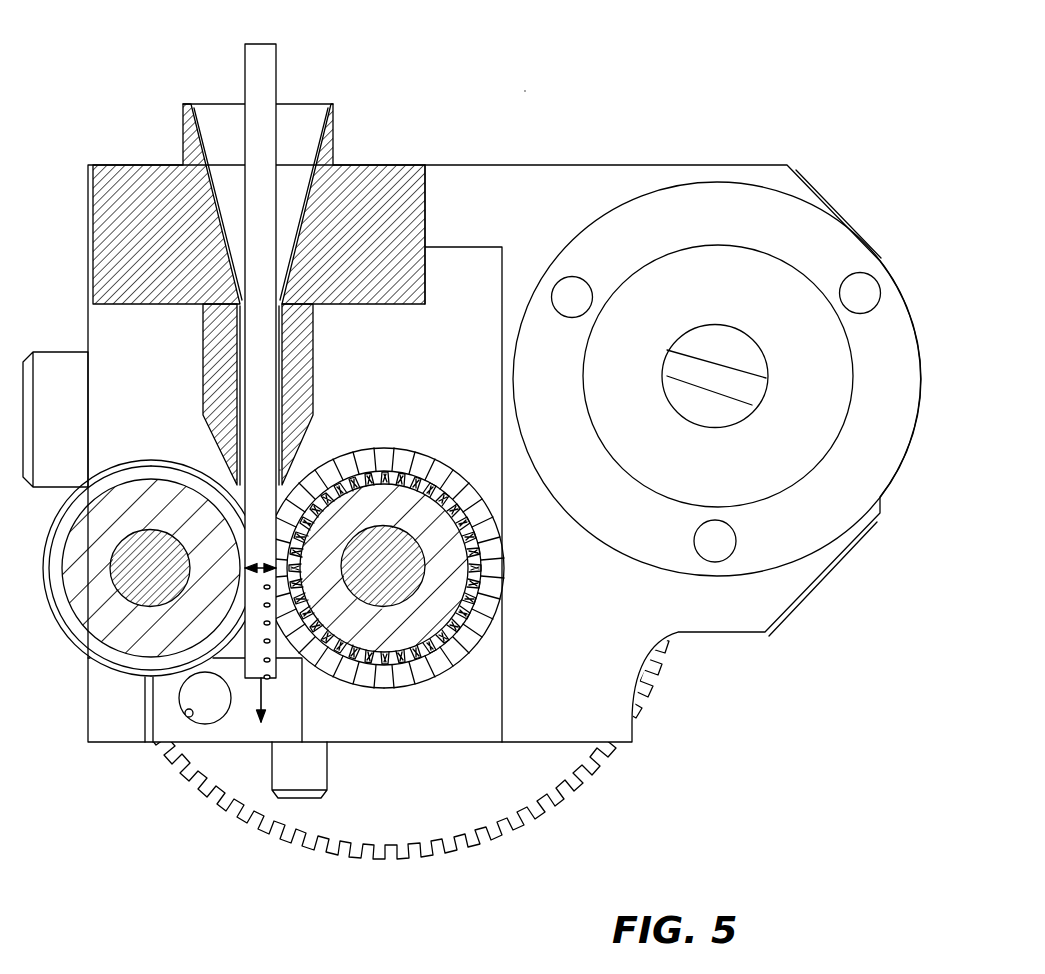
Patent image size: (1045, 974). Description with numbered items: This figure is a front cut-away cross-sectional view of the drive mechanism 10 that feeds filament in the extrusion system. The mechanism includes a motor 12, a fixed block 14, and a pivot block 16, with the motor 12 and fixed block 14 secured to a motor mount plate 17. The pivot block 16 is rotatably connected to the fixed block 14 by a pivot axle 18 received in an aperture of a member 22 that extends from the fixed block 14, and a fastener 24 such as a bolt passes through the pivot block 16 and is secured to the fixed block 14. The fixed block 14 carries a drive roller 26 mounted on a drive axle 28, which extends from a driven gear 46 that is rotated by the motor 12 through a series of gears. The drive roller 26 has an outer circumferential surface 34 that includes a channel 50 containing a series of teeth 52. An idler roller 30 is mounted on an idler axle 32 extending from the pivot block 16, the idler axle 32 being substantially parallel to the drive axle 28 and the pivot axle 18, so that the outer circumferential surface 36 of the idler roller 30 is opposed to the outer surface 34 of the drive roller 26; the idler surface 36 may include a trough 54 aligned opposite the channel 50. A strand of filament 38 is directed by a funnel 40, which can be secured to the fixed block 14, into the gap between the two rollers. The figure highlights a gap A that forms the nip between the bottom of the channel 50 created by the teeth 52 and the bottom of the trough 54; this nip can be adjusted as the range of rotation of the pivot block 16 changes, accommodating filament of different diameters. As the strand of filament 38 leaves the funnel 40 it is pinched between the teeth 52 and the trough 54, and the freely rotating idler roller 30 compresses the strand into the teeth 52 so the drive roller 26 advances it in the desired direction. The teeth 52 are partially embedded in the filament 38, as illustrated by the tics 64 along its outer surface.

The drive mechanism 10 is at (525, 91).
The motor 12 is at (715, 357).
The fixed block 14 is at (383, 744).
The pivot block 16 is at (110, 744).
The motor mount plate 17 is at (570, 165).
The pivot axle 18 is at (205, 698).
The member 22 is at (187, 718).
The fastener 24 is at (55, 352).
The drive roller 26 is at (444, 686).
The drive axle 28 is at (390, 588).
The idler roller 30 is at (66, 654).
The idler axle 32 is at (97, 624).
The outer circumferential surface 34 is at (477, 662).
The outer circumferential surface 36 is at (122, 680).
The strand of filament 38 is at (261, 742).
The funnel 40 is at (203, 357).
The driven gear 46 is at (262, 836).
The channel 50 is at (414, 454).
The series of teeth 52 is at (303, 470).
The trough 54 is at (196, 492).
The tics 64 is at (300, 630).
The gap A is at (247, 566).